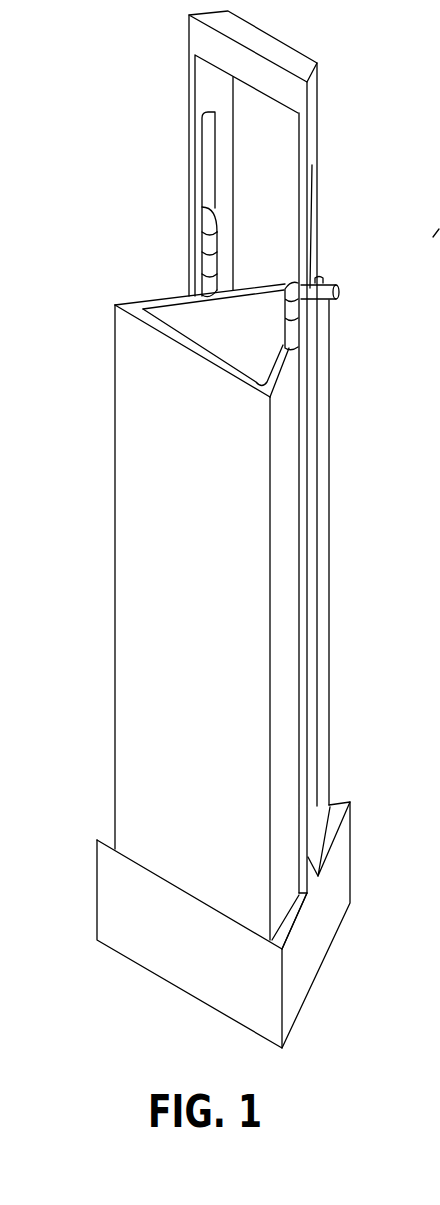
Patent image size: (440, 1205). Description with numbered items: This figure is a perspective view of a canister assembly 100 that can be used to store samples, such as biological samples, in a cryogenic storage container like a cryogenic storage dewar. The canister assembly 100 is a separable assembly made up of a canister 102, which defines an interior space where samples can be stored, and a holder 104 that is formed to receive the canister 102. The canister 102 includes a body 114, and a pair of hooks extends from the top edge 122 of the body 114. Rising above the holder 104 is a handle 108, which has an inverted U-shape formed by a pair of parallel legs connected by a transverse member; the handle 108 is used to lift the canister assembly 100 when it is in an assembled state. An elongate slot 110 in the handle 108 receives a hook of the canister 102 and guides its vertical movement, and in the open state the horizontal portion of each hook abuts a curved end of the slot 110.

The canister assembly 100 is at (134, 84).
The canister 102 is at (159, 605).
The holder 104 is at (193, 970).
The handle 108 is at (306, 80).
The slot 110 is at (207, 172).
The body 114 is at (151, 390).
The top edge 122 is at (160, 300).